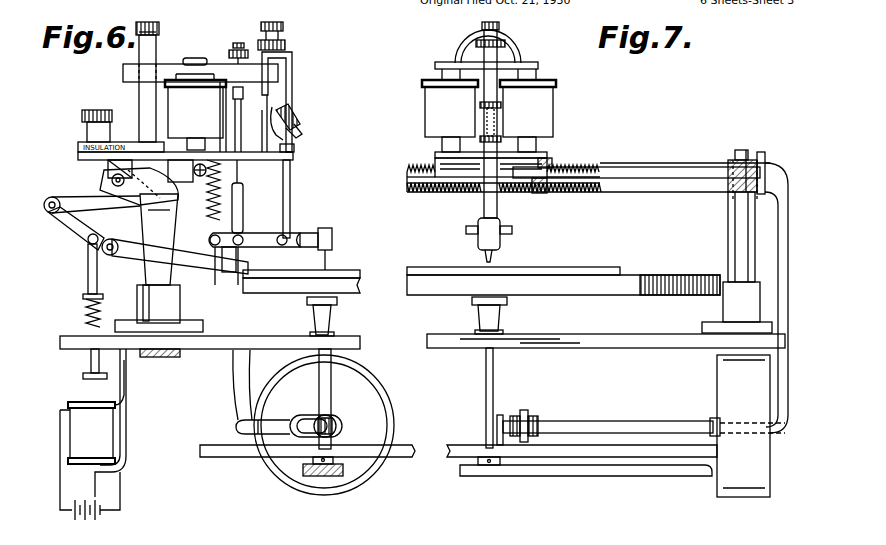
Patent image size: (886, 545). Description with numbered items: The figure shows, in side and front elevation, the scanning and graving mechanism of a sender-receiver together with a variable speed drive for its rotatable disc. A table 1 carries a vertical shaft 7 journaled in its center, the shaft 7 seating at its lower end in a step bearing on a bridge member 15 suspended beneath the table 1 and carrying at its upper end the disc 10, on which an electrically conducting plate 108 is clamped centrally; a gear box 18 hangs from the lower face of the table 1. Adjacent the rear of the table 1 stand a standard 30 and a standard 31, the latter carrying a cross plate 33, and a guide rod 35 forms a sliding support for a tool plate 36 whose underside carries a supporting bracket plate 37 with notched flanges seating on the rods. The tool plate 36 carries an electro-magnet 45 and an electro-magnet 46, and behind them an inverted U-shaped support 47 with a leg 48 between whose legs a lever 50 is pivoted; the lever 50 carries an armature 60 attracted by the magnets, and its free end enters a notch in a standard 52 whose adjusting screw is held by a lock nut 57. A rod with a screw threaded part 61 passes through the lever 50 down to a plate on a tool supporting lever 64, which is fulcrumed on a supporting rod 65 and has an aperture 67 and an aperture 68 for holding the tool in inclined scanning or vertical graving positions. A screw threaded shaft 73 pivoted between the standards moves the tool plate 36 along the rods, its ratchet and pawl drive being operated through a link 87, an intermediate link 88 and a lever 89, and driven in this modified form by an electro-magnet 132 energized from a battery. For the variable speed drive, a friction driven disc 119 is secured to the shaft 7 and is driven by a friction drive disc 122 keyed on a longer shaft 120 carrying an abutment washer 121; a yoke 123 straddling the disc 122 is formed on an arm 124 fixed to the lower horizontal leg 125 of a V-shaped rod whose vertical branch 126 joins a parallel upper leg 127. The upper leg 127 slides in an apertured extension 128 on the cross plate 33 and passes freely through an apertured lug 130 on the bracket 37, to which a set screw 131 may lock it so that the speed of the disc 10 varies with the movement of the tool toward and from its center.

In FIG. 6, the table 1 is at (348, 338).
In FIG. 7, the table 1 is at (618, 334).
In FIG. 6, the vertical shaft 7 is at (331, 352).
In FIG. 7, the vertical shaft 7 is at (486, 373).
In FIG. 6, the disc 10 is at (358, 290).
In FIG. 7, the disc 10 is at (683, 262).
In FIG. 6, the bridge member 15 is at (343, 470).
In FIG. 7, the bridge member 15 is at (664, 476).
In FIG. 6, the gear box 18 is at (270, 485).
In FIG. 7, the gear box 18 is at (717, 372).
In FIG. 6, the standard 30 is at (170, 222).
In FIG. 7, the standard 31 is at (728, 226).
In FIG. 7, the cross plate 33 is at (786, 135).
In FIG. 6, the guide rod 35 is at (204, 215).
In FIG. 7, the guide rod 35 is at (410, 168).
In FIG. 6, the tool plate 36 is at (294, 150).
In FIG. 7, the tool plate 36 is at (435, 155).
In FIG. 6, the supporting bracket plate 37 is at (108, 165).
In FIG. 6, the electro-magnet 45 is at (195, 112).
In FIG. 7, the electro-magnet 45 is at (425, 108).
In FIG. 7, the electro-magnet 46 is at (553, 104).
In FIG. 6, the inverted U-shaped support 47 is at (139, 50).
In FIG. 7, the inverted U-shaped support 47 is at (458, 52).
In FIG. 6, the leg 48 is at (132, 74).
In FIG. 6, the lever 50 is at (190, 60).
In FIG. 6, the standard 52 is at (292, 70).
In FIG. 7, the standard 52 is at (484, 204).
In FIG. 6, the lock nut 57 is at (296, 110).
In FIG. 7, the armature 60 is at (552, 58).
In FIG. 6, the screw threaded part 61 is at (243, 36).
In FIG. 6, the tool supporting lever 64 is at (265, 233).
In FIG. 6, the supporting rod 65 is at (288, 176).
In FIG. 6, the aperture 67 is at (307, 233).
In FIG. 6, the aperture 68 is at (327, 228).
In FIG. 6, the screw threaded shaft 73 is at (120, 184).
In FIG. 7, the screw threaded shaft 73 is at (410, 190).
In FIG. 6, the link 87 is at (65, 190).
In FIG. 6, the intermediate link 88 is at (72, 232).
In FIG. 6, the lever 89 is at (136, 246).
In FIG. 6, the electrically conducting plate 108 is at (345, 272).
In FIG. 7, the electrically conducting plate 108 is at (613, 268).
In FIG. 6, the friction driven disc 119 is at (402, 445).
In FIG. 7, the friction driven disc 119 is at (470, 436).
In FIG. 7, the shaft 120 is at (746, 150).
In FIG. 6, the abutment washer 121 is at (336, 420).
In FIG. 7, the abutment washer 121 is at (497, 412).
In FIG. 7, the friction drive disc 122 is at (524, 442).
In FIG. 6, the yoke 123 is at (300, 415).
In FIG. 7, the yoke 123 is at (515, 415).
In FIG. 6, the arm 124 is at (268, 420).
In FIG. 6, the lower horizontal leg 125 is at (240, 424).
In FIG. 7, the lower horizontal leg 125 is at (690, 422).
In FIG. 6, the vertical branch 126 is at (234, 383).
In FIG. 7, the vertical branch 126 is at (783, 262).
In FIG. 6, the upper leg 127 is at (243, 172).
In FIG. 7, the upper leg 127 is at (670, 150).
In FIG. 7, the apertured extension 128 is at (740, 160).
In FIG. 7, the apertured lug 130 is at (552, 160).
In FIG. 7, the set screw 131 is at (540, 193).
In FIG. 6, the electro-magnet 132 is at (70, 403).